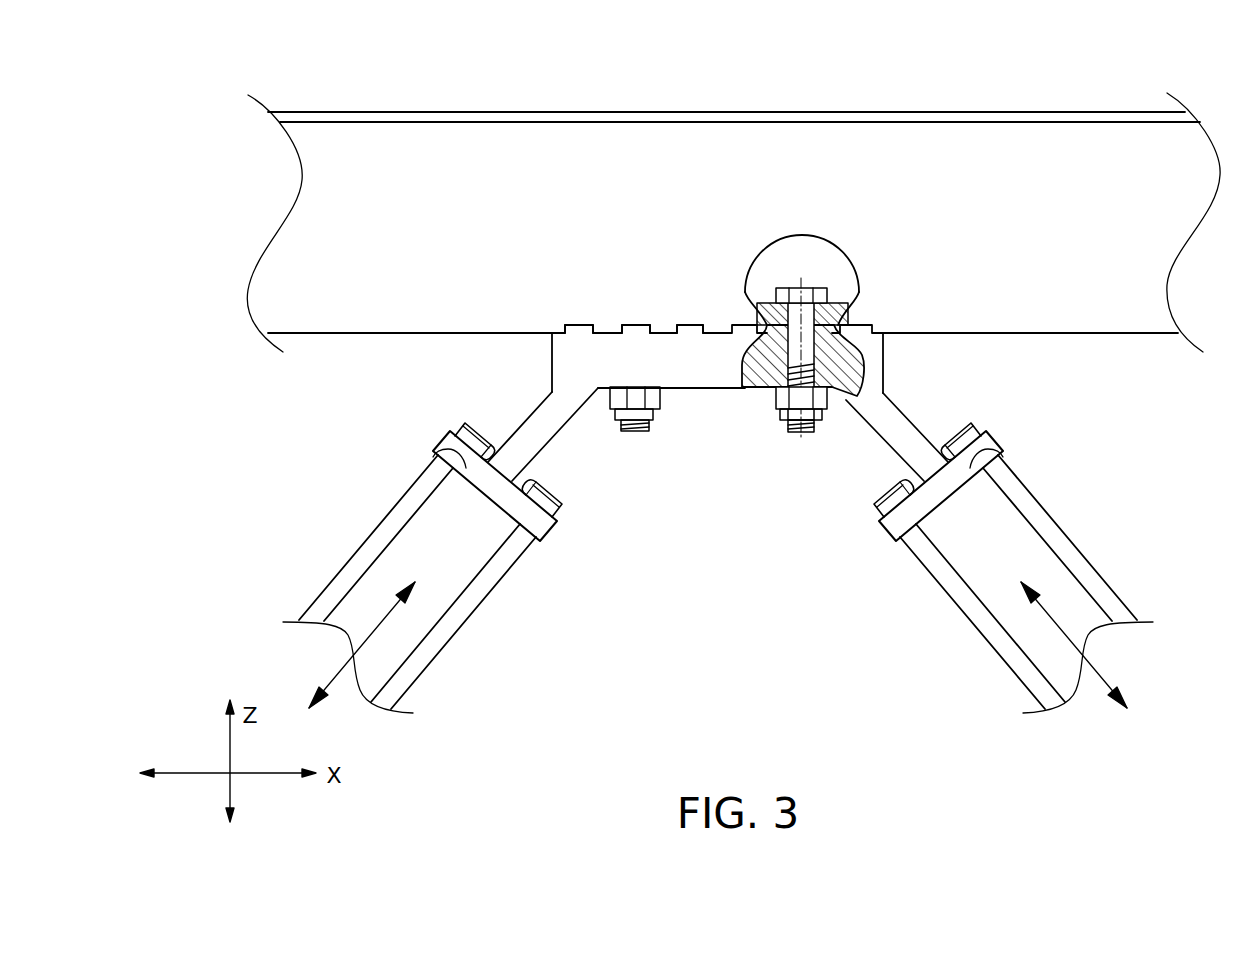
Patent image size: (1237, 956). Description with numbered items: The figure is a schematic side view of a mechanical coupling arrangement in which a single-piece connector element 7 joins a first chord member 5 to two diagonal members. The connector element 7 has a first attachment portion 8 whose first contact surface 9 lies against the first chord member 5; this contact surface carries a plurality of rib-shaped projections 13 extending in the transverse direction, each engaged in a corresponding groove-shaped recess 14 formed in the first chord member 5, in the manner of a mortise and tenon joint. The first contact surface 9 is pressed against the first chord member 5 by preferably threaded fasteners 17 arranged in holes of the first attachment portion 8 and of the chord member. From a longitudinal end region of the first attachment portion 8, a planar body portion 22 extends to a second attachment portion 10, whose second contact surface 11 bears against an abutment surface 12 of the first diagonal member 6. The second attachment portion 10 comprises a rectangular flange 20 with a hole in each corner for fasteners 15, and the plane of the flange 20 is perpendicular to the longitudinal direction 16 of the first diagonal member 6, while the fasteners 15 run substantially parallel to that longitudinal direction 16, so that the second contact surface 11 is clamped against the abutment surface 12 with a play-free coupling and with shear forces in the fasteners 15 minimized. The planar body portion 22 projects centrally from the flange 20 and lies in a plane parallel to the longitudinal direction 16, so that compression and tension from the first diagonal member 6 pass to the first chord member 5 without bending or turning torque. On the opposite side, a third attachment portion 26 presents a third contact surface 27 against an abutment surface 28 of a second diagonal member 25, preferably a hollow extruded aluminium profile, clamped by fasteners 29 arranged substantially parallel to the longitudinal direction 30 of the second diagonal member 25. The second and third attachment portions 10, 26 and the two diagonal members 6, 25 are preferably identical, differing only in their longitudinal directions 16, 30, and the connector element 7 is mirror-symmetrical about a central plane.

The first chord member 5 is at (802, 168).
The first diagonal member 6 is at (397, 650).
The connector element 7 is at (702, 380).
The first attachment portion 8 is at (928, 360).
The first contact surface 9 is at (602, 328).
The second attachment portion 10 is at (577, 556).
The second contact surface 11 is at (497, 517).
The abutment surface 12 is at (460, 477).
The rib-shaped projections 13 is at (747, 330).
The groove-shaped recesses 14 is at (638, 333).
The fasteners 15 is at (467, 442).
The longitudinal direction of the first diagonal member 16 is at (372, 632).
The fasteners 17 is at (640, 433).
The flange 20 is at (490, 487).
The planar body portion 22 is at (540, 430).
The second diagonal member 25 is at (1035, 652).
The third attachment portion 26 is at (859, 561).
The third contact surface 27 is at (937, 517).
The abutment surface 28 is at (994, 452).
The fasteners 29 is at (962, 432).
The longitudinal direction of the second diagonal member 30 is at (1065, 630).